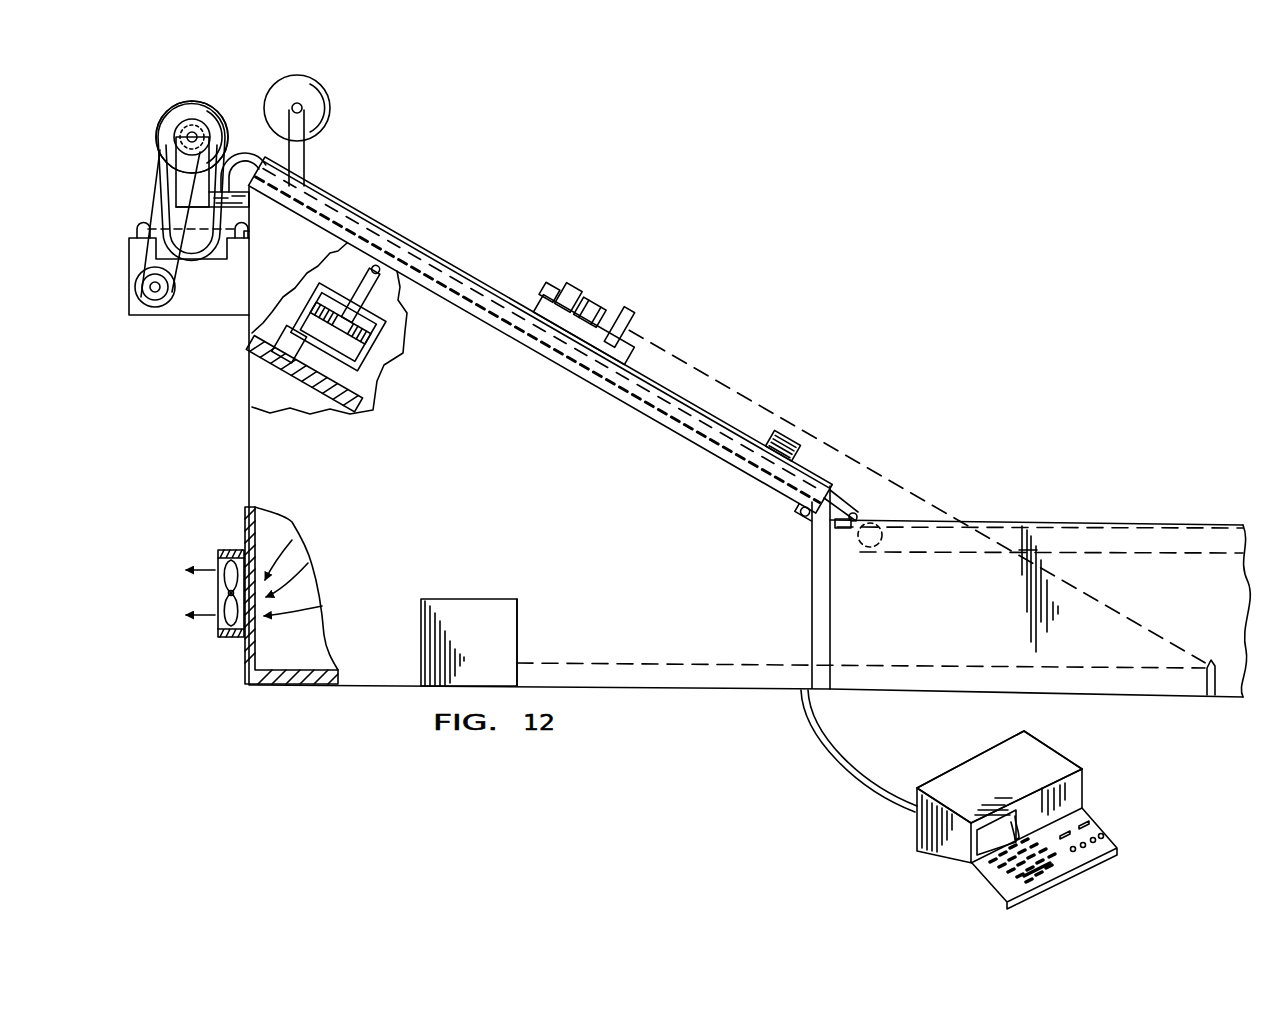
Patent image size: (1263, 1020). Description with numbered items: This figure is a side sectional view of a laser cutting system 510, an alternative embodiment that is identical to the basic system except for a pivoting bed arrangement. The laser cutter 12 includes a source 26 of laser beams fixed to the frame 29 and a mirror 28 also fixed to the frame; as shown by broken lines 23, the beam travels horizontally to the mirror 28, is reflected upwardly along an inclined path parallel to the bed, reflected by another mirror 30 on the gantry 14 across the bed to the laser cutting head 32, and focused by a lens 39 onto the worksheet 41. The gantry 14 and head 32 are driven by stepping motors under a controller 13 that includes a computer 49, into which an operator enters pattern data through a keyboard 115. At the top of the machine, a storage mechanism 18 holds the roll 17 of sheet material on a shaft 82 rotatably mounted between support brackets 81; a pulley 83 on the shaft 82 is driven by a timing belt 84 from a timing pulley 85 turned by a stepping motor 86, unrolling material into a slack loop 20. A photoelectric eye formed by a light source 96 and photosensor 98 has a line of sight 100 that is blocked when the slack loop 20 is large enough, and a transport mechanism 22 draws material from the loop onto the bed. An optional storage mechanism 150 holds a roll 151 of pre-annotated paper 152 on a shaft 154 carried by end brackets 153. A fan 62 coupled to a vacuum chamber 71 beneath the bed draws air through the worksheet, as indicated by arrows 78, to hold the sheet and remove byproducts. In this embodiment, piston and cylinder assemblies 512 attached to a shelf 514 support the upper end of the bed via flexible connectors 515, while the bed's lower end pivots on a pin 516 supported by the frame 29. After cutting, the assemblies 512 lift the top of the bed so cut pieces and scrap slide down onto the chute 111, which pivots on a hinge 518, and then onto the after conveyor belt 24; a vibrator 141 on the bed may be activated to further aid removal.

The laser cutter 12 is at (465, 596).
The controller 13 is at (1093, 775).
The gantry 14 is at (614, 326).
The roll of sheet material 17 is at (156, 133).
The storage mechanism 18 is at (214, 92).
The slack loop 20 is at (202, 258).
The transport mechanism 22 is at (531, 296).
The broken lines 23 is at (672, 663).
The after conveyor belt 24 is at (968, 520).
The source of laser beams 26 is at (519, 627).
The mirror 28 is at (1203, 682).
The frame 29 is at (247, 393).
The mirror 30 is at (565, 282).
The laser cutting head 32 is at (543, 281).
The lens 39 is at (594, 302).
The worksheet 41 is at (250, 236).
The computer 49 is at (1037, 754).
The fan 62 is at (221, 621).
The vacuum chamber 71 is at (300, 657).
The arrows 78 is at (270, 578).
The support brackets 81 is at (185, 178).
The shaft 82 is at (202, 130).
The pulley 83 is at (183, 121).
The timing belt 84 is at (128, 256).
The timing pulley 85 is at (153, 308).
The stepping motor 86 is at (135, 288).
The light source 96 is at (136, 226).
The photosensor 98 is at (249, 226).
The line of sight 100 is at (173, 227).
The chute 111 is at (847, 502).
The keyboard 115 is at (976, 861).
The vibrator 141 is at (787, 437).
The storage mechanism 150 is at (299, 76).
The roll of pre-annotated paper 151 is at (325, 125).
The pre-annotated paper 152 is at (244, 154).
The end brackets 153 is at (301, 153).
The shaft 154 is at (302, 106).
The laser cutting system 510 is at (715, 311).
The piston and cylinder assemblies 512 is at (373, 347).
The shelf 514 is at (323, 393).
The flexible connectors 515 is at (397, 276).
The pin 516 is at (802, 508).
The hinge 518 is at (859, 540).